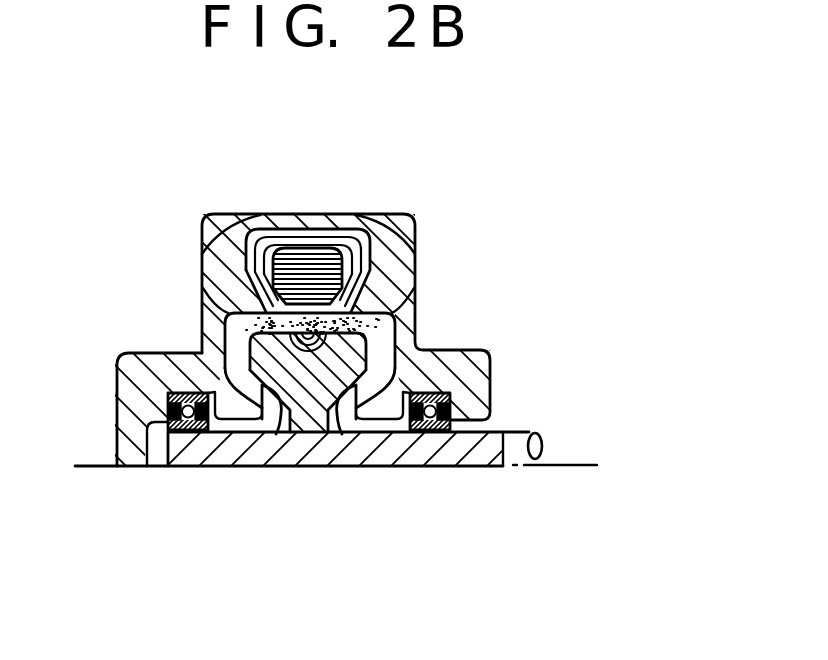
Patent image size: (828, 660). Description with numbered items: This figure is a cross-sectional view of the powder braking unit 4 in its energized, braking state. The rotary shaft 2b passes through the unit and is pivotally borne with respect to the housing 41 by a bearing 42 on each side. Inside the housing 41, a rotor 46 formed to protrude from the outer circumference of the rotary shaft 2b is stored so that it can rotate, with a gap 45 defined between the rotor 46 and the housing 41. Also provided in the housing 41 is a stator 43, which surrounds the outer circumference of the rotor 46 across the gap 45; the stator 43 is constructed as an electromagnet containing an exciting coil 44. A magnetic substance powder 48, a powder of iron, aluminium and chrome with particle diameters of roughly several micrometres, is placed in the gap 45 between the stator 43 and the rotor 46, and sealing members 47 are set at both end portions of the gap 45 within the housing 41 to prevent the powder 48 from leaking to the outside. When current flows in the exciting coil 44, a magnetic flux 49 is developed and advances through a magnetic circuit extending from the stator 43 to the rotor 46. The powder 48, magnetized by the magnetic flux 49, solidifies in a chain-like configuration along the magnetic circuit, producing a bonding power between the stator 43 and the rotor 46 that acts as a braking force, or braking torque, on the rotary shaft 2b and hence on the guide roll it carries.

The rotary shaft 2b is at (520, 418).
The powder braking unit 4 is at (422, 226).
The housing 41 is at (393, 215).
The bearing 42 is at (189, 432).
The stator 43 is at (257, 230).
The exciting coil 44 is at (309, 262).
The gap 45 is at (372, 327).
The rotor 46 is at (310, 373).
The sealing member 47 is at (283, 420).
The magnetic substance powder 48 is at (208, 290).
The magnetic flux 49 is at (202, 238).